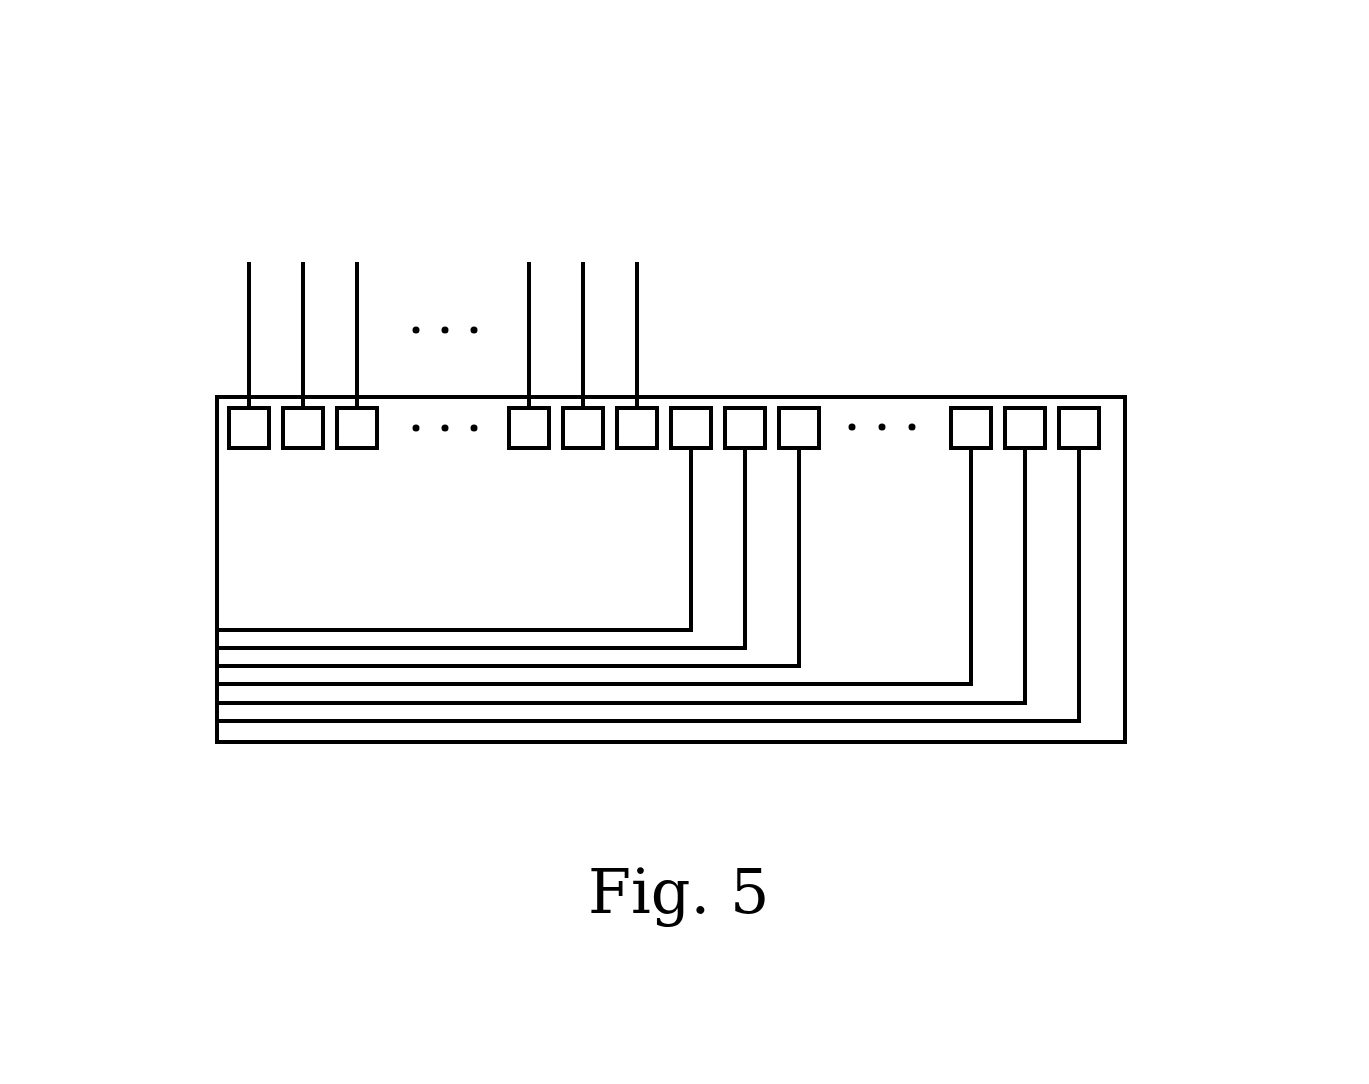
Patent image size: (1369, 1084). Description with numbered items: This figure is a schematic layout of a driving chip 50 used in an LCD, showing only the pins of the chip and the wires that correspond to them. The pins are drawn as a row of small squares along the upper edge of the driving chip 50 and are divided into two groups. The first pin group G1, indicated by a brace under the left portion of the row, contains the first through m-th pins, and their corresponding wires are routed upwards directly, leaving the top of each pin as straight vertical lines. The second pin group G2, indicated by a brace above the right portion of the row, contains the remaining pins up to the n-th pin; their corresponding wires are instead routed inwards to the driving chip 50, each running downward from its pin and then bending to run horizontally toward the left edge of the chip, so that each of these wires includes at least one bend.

The driving chip 50 is at (1178, 187).
The first pin group G1 is at (390, 377).
The second pin group G2 is at (891, 319).